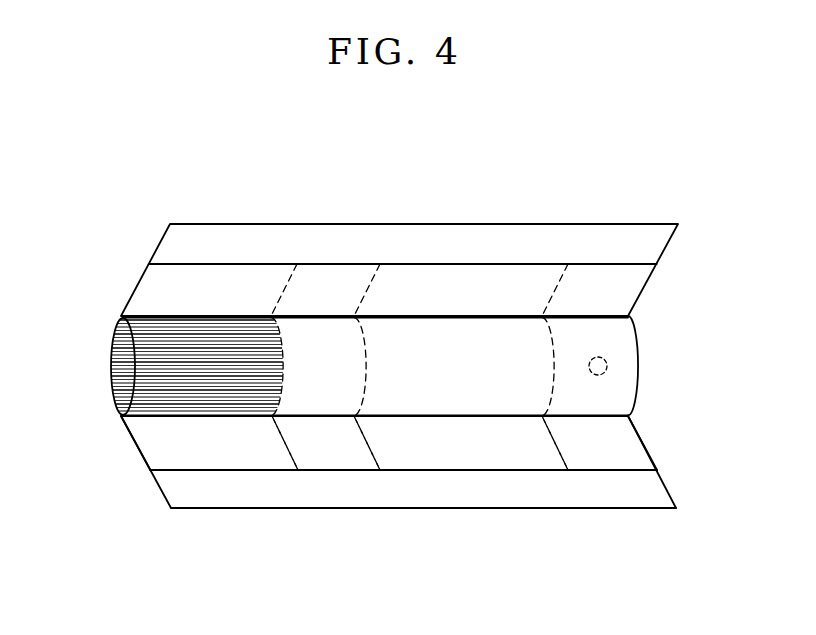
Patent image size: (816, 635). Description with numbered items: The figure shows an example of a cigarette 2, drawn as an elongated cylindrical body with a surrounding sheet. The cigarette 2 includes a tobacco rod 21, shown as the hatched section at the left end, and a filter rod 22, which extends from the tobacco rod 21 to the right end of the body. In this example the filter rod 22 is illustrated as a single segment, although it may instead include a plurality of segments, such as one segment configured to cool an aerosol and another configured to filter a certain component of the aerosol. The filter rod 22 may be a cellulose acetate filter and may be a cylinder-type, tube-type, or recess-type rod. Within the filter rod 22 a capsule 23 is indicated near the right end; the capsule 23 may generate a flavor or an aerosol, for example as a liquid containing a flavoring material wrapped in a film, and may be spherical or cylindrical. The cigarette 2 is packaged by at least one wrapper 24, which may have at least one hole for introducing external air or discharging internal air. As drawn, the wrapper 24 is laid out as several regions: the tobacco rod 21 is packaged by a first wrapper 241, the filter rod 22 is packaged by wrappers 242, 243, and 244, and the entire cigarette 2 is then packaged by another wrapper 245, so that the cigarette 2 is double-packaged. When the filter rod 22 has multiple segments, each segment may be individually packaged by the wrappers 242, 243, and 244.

The cigarette 2 is at (383, 351).
The tobacco rod 21 is at (124, 370).
The filter rod 22 is at (440, 332).
The capsule 23 is at (607, 366).
The wrapper 24 is at (413, 493).
The first wrapper 241 is at (216, 450).
The wrapper 242 is at (328, 452).
The wrapper 243 is at (470, 452).
The wrapper 244 is at (606, 452).
The wrapper 245 is at (552, 500).